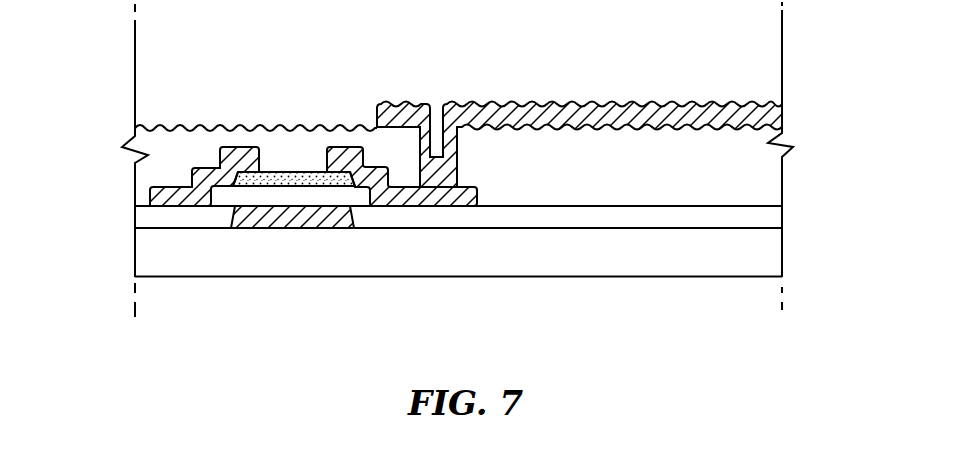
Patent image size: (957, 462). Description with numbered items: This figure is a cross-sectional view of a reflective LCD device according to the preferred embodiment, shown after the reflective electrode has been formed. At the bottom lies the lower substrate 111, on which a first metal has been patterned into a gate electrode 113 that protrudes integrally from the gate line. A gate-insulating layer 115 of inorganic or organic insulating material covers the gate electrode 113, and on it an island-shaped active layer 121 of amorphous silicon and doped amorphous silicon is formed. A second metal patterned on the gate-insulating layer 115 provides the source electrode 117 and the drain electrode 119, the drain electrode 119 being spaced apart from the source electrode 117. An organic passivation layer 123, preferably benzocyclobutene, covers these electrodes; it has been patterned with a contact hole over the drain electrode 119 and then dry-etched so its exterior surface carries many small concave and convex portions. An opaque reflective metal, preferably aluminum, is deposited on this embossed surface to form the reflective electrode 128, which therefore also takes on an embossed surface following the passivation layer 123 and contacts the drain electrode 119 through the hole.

The lower substrate 111 is at (703, 255).
The gate electrode 113 is at (267, 218).
The gate-insulating layer 115 is at (768, 217).
The source electrode 117 is at (190, 186).
The drain electrode 119 is at (450, 195).
The active layer 121 is at (300, 178).
The passivation layer 123 is at (755, 173).
The reflective electrode 128 is at (770, 110).